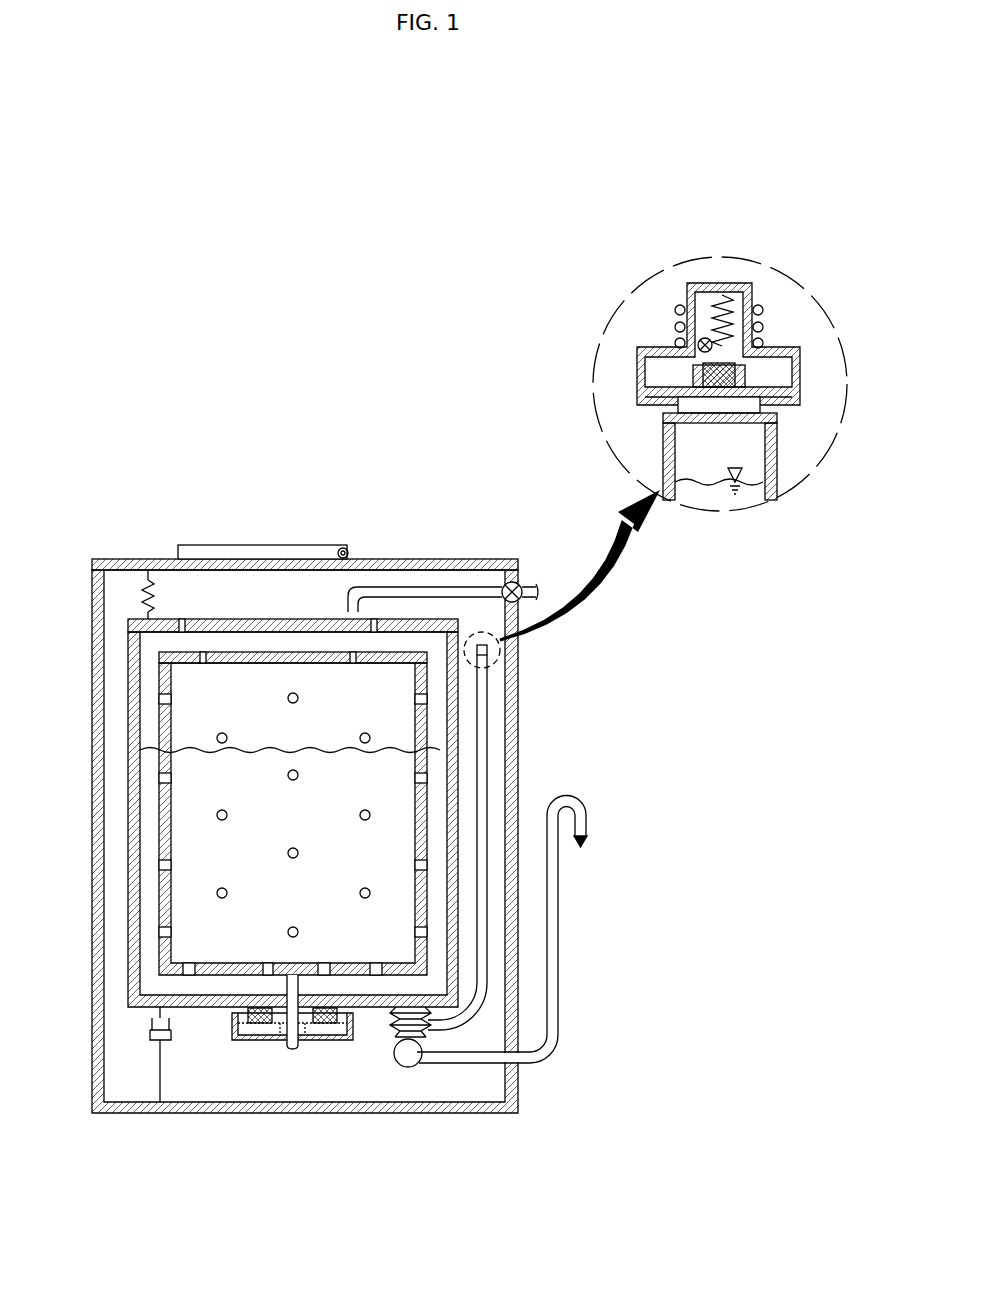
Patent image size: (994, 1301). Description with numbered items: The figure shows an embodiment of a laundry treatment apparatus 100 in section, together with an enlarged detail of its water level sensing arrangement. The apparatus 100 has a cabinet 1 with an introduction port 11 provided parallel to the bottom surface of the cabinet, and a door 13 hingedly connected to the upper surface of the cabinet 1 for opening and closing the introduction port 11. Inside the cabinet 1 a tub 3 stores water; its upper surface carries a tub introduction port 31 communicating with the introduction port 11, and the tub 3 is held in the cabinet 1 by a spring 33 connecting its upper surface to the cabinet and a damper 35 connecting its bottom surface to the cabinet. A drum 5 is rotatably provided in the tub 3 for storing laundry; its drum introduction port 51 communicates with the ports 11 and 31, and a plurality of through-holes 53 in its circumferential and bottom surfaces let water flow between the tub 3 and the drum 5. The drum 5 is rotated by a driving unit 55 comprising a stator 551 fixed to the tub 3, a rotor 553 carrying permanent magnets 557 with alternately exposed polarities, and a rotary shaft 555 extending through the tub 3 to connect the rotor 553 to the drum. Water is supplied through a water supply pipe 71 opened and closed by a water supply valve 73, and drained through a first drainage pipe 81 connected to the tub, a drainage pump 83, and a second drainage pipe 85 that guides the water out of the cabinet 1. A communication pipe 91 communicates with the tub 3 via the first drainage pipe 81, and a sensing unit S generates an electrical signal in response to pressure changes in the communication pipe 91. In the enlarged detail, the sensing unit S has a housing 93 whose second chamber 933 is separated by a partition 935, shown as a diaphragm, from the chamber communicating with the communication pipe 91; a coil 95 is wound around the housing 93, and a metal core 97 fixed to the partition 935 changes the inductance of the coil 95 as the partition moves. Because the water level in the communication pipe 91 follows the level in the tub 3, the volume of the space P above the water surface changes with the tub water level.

The laundry treatment apparatus 100 is at (62, 513).
The cabinet 1 is at (95, 650).
The introduction port 11 is at (322, 560).
The door 13 is at (268, 550).
The tub 3 is at (124, 821).
The tub introduction port 31 is at (200, 627).
The spring 33 is at (142, 572).
The damper 35 is at (158, 1075).
The drum 5 is at (186, 880).
The drum introduction port 51 is at (244, 656).
The through-holes 53 is at (217, 738).
The driving unit 55 is at (267, 1099).
The stator 551 is at (267, 1040).
The rotor 553 is at (337, 1040).
The rotary shaft 555 is at (293, 1050).
The permanent magnets 557 is at (228, 1040).
The water supply pipe 71 is at (447, 587).
The water supply valve 73 is at (522, 582).
The first drainage pipe 81 is at (392, 1040).
The drainage pump 83 is at (412, 1067).
The second drainage pipe 85 is at (483, 1065).
The communication pipe 91 is at (488, 770).
The sensing unit S is at (498, 672).
The housing 93 is at (790, 352).
The second chamber 933 is at (765, 378).
The partition 935 is at (807, 388).
The coil 95 is at (760, 307).
The core 97 is at (693, 382).
The space P is at (697, 452).